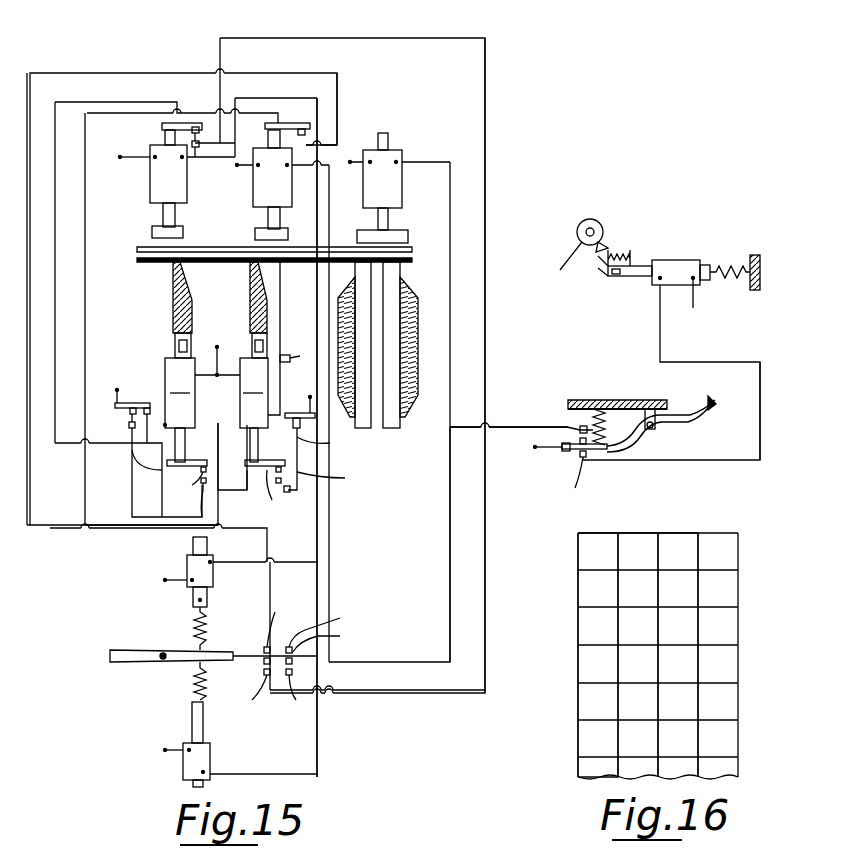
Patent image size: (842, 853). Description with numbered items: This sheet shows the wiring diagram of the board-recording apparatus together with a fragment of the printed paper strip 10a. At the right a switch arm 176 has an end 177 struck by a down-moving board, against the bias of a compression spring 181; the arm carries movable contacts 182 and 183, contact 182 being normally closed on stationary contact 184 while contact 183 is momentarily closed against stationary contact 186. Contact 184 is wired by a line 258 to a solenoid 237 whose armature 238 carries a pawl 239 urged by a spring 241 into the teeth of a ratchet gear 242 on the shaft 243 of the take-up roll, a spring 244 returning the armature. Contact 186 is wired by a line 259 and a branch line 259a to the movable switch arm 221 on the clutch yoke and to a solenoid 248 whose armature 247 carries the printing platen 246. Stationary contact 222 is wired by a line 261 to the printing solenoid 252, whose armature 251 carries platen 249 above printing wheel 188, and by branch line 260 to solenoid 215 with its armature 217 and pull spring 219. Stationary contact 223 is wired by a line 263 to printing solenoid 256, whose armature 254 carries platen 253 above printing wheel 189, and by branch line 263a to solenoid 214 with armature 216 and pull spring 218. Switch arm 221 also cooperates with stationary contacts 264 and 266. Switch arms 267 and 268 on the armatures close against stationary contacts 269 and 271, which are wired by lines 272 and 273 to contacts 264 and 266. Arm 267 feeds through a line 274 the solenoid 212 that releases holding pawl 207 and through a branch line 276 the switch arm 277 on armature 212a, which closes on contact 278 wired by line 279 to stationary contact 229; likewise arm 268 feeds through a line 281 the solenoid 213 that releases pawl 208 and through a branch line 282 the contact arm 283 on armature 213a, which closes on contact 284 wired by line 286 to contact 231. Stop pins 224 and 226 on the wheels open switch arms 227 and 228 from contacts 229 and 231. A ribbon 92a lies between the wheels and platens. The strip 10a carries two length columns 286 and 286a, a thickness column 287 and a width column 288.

In FIG. 15, the paper strip 10a is at (412, 260).
In FIG. 16, the paper strip 10a is at (570, 672).
In FIG. 15, the ribbon 92a is at (412, 250).
In FIG. 15, the switch arm 176 is at (645, 449).
In FIG. 15, the end of switch arm 177 is at (698, 418).
In FIG. 15, the compression spring 181 is at (618, 410).
In FIG. 15, the movable contact 182 is at (572, 455).
In FIG. 15, the movable contact 183 is at (575, 430).
In FIG. 15, the stationary contact 184 is at (652, 435).
In FIG. 15, the stationary contact 186 is at (588, 412).
In FIG. 15, the printing wheel 188 is at (262, 300).
In FIG. 15, the printing wheel 189 is at (172, 312).
In FIG. 15, the holding pawl 207 is at (268, 320).
In FIG. 15, the holding pawl 208 is at (175, 345).
In FIG. 15, the solenoid 212 is at (262, 420).
In FIG. 15, the armature 212a is at (238, 425).
In FIG. 15, the solenoid 213 is at (202, 404).
In FIG. 15, the armature 213a is at (215, 424).
In FIG. 15, the solenoid 214 is at (187, 565).
In FIG. 15, the solenoid 215 is at (183, 768).
In FIG. 15, the solenoid armature 216 is at (193, 600).
In FIG. 15, the solenoid armature 217 is at (192, 726).
In FIG. 15, the pull spring 218 is at (208, 626).
In FIG. 15, the pull spring 219 is at (196, 680).
In FIG. 15, the movable switch arm 221 is at (328, 631).
In FIG. 15, the stationary contact 222 is at (328, 645).
In FIG. 15, the stationary contact 223 is at (293, 697).
In FIG. 15, the stop pin 224 is at (305, 352).
In FIG. 15, the stop pin 226 is at (133, 450).
In FIG. 15, the switch arm 227 is at (292, 400).
In FIG. 15, the switch arm 228 is at (138, 400).
In FIG. 15, the stationary contact 229 is at (331, 445).
In FIG. 15, the stationary contact 231 is at (129, 426).
In FIG. 15, the solenoid 237 is at (680, 260).
In FIG. 15, the armature 238 is at (712, 265).
In FIG. 15, the pawl 239 is at (605, 276).
In FIG. 15, the spring 241 is at (620, 252).
In FIG. 15, the ratchet gear 242 is at (560, 266).
In FIG. 15, the shaft 243 is at (590, 228).
In FIG. 15, the spring 244 is at (735, 282).
In FIG. 15, the printing platen 246 is at (405, 232).
In FIG. 15, the armature 247 is at (378, 222).
In FIG. 15, the solenoid 248 is at (396, 196).
In FIG. 15, the printing platen 249 is at (255, 235).
In FIG. 15, the armature 251 is at (272, 218).
In FIG. 15, the printing solenoid 252 is at (253, 186).
In FIG. 15, the printing platen 253 is at (152, 232).
In FIG. 15, the armature 254 is at (163, 214).
In FIG. 15, the printing solenoid 256 is at (150, 186).
In FIG. 15, the line 258 is at (760, 390).
In FIG. 15, the line 259 is at (505, 427).
In FIG. 15, the branch line 259a is at (448, 548).
In FIG. 15, the branch line 260 is at (276, 775).
In FIG. 15, the line 261 is at (330, 528).
In FIG. 15, the line 263 is at (320, 575).
In FIG. 15, the branch line 263a is at (236, 566).
In FIG. 15, the stationary contact 264 is at (374, 626).
In FIG. 15, the stationary contact 266 is at (244, 697).
In FIG. 15, the switch arm 267 is at (295, 125).
In FIG. 15, the switch arm 268 is at (193, 126).
In FIG. 15, the stationary contact 269 is at (303, 148).
In FIG. 15, the stationary contact 271 is at (196, 150).
In FIG. 15, the line 272 is at (52, 528).
In FIG. 15, the line 273 is at (486, 600).
In FIG. 15, the line 274 is at (86, 310).
In FIG. 15, the branch line 276 is at (244, 494).
In FIG. 15, the switch arm 277 is at (274, 502).
In FIG. 15, the stationary contact 278 is at (288, 492).
In FIG. 15, the line 279 is at (336, 480).
In FIG. 15, the line 281 is at (84, 98).
In FIG. 15, the branch line 282 is at (130, 470).
In FIG. 15, the contact arm 283 is at (192, 484).
In FIG. 15, the contact 284 is at (202, 490).
In FIG. 15, the length column 286 is at (130, 520).
In FIG. 16, the length column 286 is at (600, 523).
In FIG. 16, the length column 286a is at (638, 532).
In FIG. 16, the thickness column 287 is at (682, 532).
In FIG. 16, the width column 288 is at (725, 532).